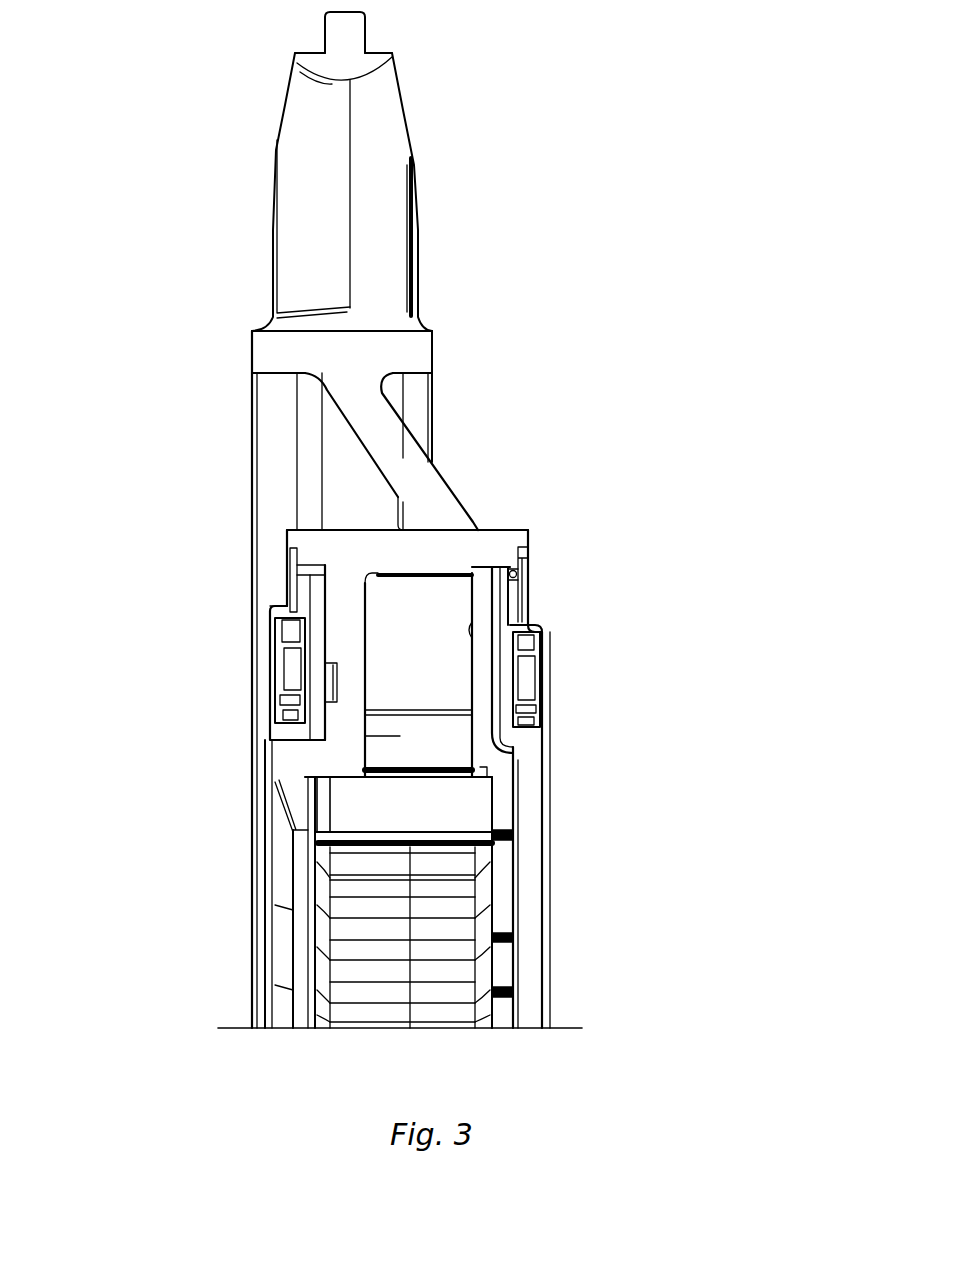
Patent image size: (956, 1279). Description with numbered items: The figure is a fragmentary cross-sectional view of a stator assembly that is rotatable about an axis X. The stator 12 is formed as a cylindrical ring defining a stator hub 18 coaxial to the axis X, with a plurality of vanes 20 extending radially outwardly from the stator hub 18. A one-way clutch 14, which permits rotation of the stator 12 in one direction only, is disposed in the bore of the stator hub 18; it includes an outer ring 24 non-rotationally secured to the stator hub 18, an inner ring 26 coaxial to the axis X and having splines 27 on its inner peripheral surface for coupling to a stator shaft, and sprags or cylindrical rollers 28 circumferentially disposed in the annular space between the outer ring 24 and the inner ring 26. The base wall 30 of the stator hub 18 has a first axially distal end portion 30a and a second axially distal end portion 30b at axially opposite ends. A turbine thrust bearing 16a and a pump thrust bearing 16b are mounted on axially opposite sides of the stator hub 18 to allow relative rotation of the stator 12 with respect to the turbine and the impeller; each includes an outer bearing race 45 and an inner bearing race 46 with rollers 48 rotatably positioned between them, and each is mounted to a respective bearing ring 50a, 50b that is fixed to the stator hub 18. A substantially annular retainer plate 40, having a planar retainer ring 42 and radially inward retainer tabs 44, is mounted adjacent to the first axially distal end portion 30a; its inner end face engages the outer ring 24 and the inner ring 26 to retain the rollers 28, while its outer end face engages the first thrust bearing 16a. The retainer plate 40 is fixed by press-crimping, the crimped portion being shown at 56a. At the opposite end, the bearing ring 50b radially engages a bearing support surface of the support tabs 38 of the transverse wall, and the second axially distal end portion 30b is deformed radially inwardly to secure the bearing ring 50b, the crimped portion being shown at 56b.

The stator 12 is at (417, 192).
The one-way clutch 14 is at (412, 598).
The turbine thrust bearing 16a is at (549, 700).
The pump thrust bearing 16b is at (250, 676).
The stator hub 18 is at (486, 516).
The vanes 20 is at (300, 140).
The outer ring 24 is at (425, 684).
The inner ring 26 is at (430, 824).
The splines 27 is at (428, 962).
The rollers 28 is at (430, 765).
The base wall 30 is at (373, 550).
The first axially distal end portion 30a is at (510, 542).
The second axially distal end portion 30b is at (302, 542).
The support tabs 38 is at (266, 790).
The retainer plate 40 is at (517, 770).
The retainer ring 42 is at (497, 598).
The retainer tabs 44 is at (503, 807).
The outer bearing race 45 is at (277, 637).
The inner bearing race 46 is at (300, 700).
The rollers 48 is at (288, 658).
The first bearing ring 50a is at (500, 612).
The second bearing ring 50b is at (318, 596).
The crimped portion 56a is at (518, 584).
The crimped portion 56b is at (315, 582).
The axis X is at (232, 1030).